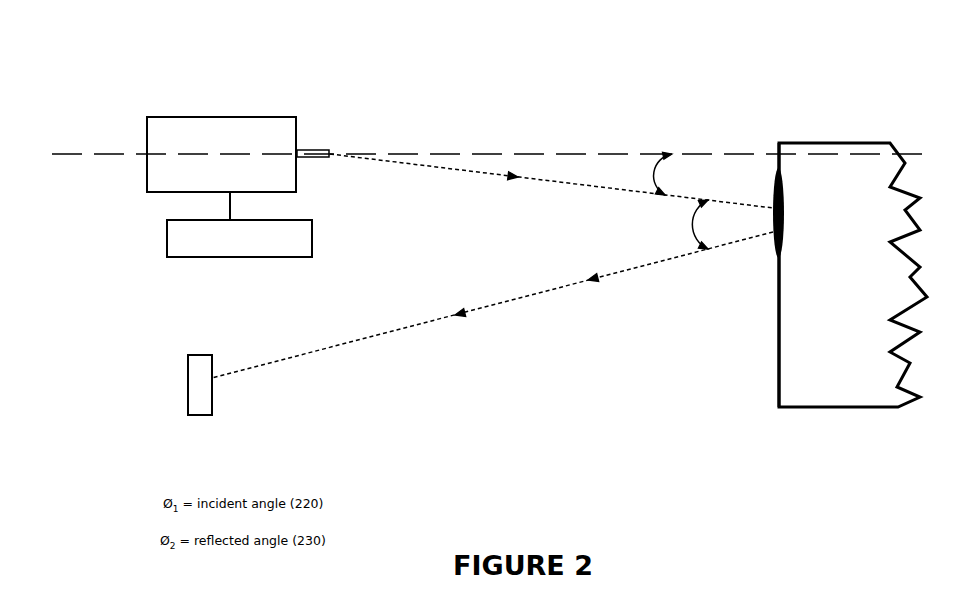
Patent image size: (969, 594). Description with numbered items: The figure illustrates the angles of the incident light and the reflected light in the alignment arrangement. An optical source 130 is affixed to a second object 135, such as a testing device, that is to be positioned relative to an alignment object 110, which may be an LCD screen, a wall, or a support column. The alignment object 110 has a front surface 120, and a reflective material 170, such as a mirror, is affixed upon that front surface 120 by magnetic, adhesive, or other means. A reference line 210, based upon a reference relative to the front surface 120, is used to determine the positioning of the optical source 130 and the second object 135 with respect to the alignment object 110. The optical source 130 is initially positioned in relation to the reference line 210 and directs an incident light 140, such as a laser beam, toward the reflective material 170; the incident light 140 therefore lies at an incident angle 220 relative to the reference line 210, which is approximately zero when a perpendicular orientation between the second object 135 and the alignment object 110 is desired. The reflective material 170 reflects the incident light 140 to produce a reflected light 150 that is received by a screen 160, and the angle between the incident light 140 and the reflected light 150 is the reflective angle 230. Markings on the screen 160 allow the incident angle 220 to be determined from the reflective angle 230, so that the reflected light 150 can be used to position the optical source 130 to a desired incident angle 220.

The alignment object 110 is at (777, 372).
The front surface 120 is at (777, 160).
The optical source 130 is at (240, 117).
The second object 135 is at (312, 233).
The incident light 140 is at (605, 188).
The reflected light 150 is at (398, 330).
The screen 160 is at (188, 367).
The reflective material 170 is at (773, 242).
The reference line 210 is at (95, 154).
The incident angle 220 is at (655, 175).
The reflective angle 230 is at (693, 230).